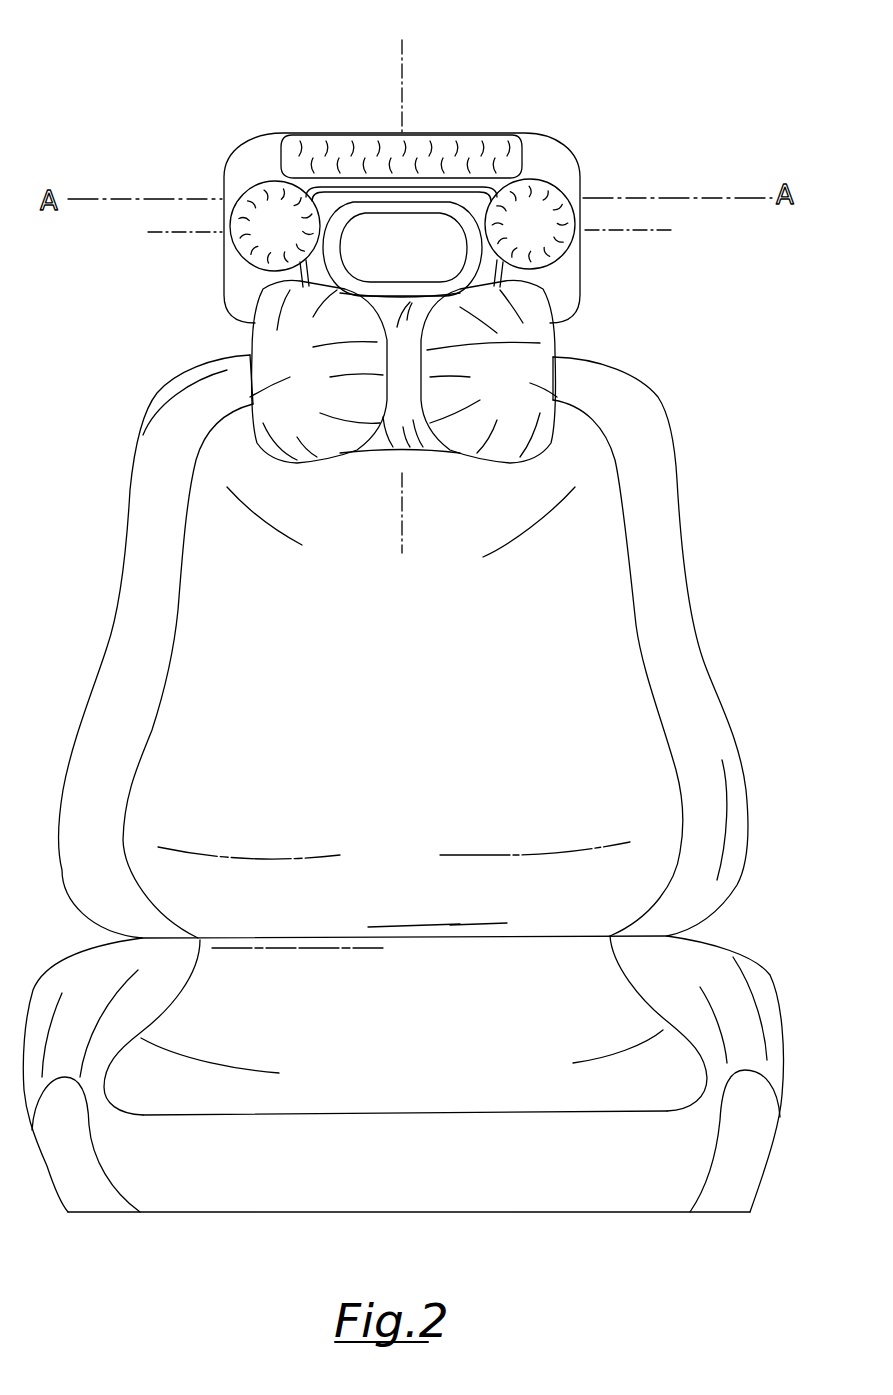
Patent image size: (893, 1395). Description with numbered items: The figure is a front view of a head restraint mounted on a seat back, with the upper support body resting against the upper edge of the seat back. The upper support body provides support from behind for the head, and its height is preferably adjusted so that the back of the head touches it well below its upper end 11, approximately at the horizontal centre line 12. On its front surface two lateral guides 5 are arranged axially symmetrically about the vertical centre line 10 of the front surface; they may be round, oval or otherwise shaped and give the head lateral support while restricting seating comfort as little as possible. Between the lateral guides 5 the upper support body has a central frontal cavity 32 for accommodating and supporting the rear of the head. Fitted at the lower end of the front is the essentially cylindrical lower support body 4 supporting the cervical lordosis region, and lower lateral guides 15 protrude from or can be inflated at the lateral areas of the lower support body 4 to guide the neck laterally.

The vertical centre line 10 is at (403, 67).
The upper end 11 is at (280, 133).
The lateral guides 5 is at (540, 198).
The central frontal cavity 32 is at (357, 240).
The horizontal centre line 12 is at (623, 232).
The lower support body 4 is at (423, 367).
The lower lateral guides 15 is at (252, 401).